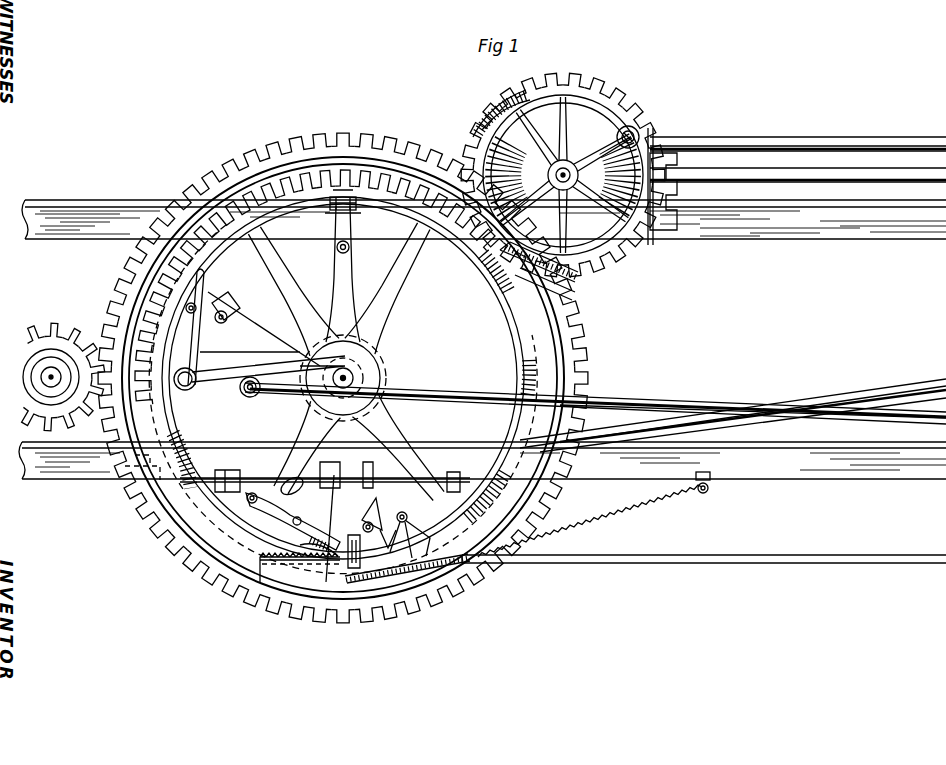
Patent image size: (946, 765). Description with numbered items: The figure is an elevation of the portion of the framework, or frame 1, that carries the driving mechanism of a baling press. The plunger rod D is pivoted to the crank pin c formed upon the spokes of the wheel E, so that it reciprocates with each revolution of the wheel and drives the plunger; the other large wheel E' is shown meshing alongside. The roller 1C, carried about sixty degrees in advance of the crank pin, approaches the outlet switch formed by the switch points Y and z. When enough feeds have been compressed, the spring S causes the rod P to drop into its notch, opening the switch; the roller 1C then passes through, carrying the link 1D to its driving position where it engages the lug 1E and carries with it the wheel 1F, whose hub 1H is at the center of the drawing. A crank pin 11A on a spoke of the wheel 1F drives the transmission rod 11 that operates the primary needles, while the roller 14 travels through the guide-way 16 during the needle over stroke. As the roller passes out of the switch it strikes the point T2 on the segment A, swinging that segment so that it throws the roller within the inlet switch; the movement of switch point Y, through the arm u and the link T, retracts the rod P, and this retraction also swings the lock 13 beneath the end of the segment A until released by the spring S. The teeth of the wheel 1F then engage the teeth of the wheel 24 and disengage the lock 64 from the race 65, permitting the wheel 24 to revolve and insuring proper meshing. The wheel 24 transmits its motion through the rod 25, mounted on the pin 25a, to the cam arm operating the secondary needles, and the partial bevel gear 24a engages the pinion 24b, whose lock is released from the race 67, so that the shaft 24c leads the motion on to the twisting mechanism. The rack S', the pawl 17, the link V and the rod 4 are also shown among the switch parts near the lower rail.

The frame 1 is at (90, 206).
The wheel E is at (343, 378).
The lug 1E is at (198, 238).
The wheel 1F is at (207, 186).
The wheel hub and spokes 1H is at (378, 370).
The roller 1C is at (226, 300).
The link 1D is at (222, 340).
The roller 14 is at (222, 365).
The crank pin 11A is at (252, 385).
The transmission rod 11 is at (607, 402).
The plunger rod D is at (900, 396).
The spring S is at (594, 514).
The rod P is at (660, 566).
The small gear E' is at (67, 378).
The race 67 is at (585, 88).
The pin 25a is at (638, 128).
The partial bevel gear 24a is at (470, 140).
The wheel 24 is at (638, 118).
The pinion 24b is at (664, 145).
The shaft 24c is at (715, 173).
The rod 25 is at (780, 140).
The lock 64 is at (575, 287).
The race 65 is at (560, 305).
The crank pin c is at (135, 483).
The lever 17 is at (330, 522).
The switch point z is at (366, 515).
The switch point Y is at (397, 527).
The arm u is at (417, 533).
The link V is at (388, 540).
The rack S' is at (300, 544).
The link T is at (400, 618).
The point T2 is at (262, 518).
The guide-way 16 is at (262, 563).
The rod 4 is at (327, 585).
The lock 13 is at (360, 570).
The segment A is at (338, 585).